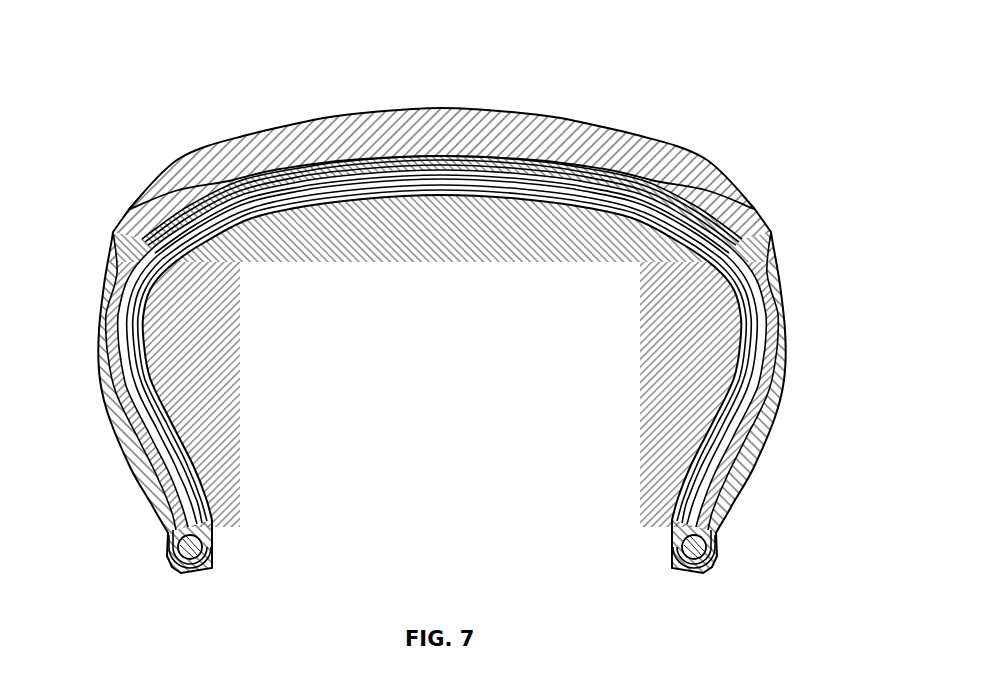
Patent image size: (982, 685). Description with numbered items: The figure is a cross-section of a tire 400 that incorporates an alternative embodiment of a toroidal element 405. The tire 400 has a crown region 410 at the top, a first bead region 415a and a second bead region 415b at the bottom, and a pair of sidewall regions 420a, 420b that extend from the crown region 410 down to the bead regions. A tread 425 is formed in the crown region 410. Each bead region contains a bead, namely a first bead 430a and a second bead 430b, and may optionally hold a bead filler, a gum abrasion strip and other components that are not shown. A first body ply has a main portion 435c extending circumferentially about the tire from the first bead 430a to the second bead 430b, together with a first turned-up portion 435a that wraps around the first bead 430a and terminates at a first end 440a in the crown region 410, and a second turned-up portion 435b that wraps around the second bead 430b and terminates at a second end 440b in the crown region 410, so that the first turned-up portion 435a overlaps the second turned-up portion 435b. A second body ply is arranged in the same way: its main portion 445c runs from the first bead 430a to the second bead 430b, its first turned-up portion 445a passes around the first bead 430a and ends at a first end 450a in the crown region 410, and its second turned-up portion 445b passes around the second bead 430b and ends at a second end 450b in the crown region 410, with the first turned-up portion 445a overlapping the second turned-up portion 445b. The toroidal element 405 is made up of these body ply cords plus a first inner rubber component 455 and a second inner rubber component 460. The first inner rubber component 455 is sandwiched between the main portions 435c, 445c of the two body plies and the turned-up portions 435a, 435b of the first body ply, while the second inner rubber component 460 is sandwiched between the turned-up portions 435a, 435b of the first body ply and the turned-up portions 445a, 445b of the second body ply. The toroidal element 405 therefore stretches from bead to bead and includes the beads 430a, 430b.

The tire 400 is at (138, 28).
The toroidal element 405 is at (750, 224).
The crown region 410 is at (790, 140).
The first bead region 415a is at (790, 520).
The second bead region 415b is at (95, 520).
The sidewall region 420a is at (790, 222).
The sidewall region 420b is at (95, 222).
The tread 425 is at (484, 104).
The first bead 430a is at (700, 574).
The second bead 430b is at (183, 574).
The first turned-up portion 435a is at (610, 204).
The second turned-up portion 435b is at (274, 194).
The main portion 435c is at (228, 214).
The first end 440a is at (300, 191).
The second end 440b is at (565, 200).
The first turned-up portion 445a is at (601, 172).
The second turned-up portion 445b is at (271, 174).
The main portion 445c is at (174, 241).
The first end 450a is at (304, 166).
The second end 450b is at (562, 158).
The first inner rubber component 455 is at (726, 245).
The second inner rubber component 460 is at (678, 190).